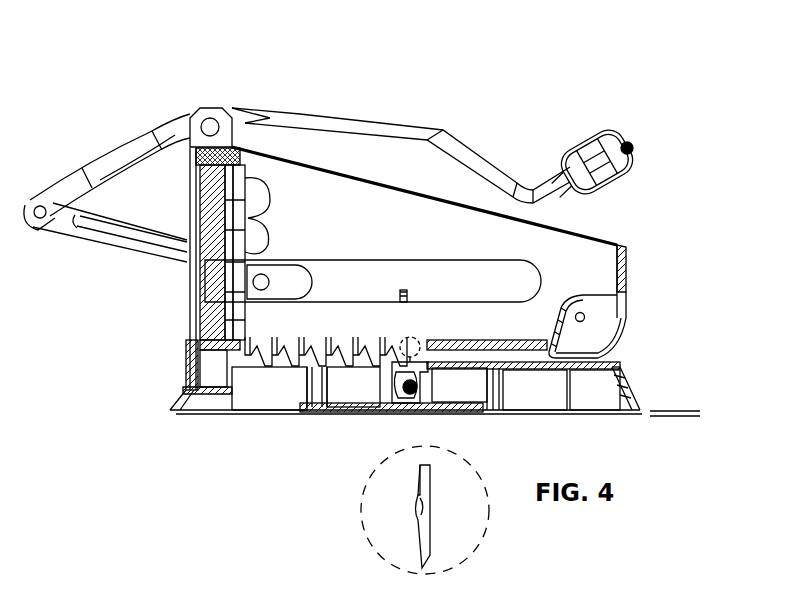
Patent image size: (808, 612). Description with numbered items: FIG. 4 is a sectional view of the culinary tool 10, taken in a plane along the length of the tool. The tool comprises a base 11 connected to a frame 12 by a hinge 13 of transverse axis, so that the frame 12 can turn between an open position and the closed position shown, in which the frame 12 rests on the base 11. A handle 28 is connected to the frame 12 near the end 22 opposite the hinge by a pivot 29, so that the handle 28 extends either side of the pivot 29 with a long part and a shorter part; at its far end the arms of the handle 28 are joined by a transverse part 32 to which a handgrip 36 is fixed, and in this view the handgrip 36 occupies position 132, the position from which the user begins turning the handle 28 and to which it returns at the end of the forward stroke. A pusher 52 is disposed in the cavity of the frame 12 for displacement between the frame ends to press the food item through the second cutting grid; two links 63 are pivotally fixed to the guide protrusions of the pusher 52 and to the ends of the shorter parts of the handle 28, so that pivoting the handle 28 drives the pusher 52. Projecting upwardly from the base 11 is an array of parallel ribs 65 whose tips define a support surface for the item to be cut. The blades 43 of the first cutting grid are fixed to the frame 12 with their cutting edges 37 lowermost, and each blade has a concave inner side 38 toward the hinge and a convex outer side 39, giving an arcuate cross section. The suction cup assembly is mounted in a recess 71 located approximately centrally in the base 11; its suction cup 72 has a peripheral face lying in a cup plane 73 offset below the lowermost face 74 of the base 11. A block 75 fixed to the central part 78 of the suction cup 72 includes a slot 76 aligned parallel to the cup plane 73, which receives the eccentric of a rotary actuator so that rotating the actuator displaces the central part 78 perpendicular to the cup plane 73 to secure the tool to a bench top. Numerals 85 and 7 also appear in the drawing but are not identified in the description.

The culinary tool 10 is at (105, 120).
The pivot 29 is at (212, 122).
The handle 28 is at (398, 118).
The handgrip 36 is at (583, 125).
The transverse part 32 is at (630, 146).
The position of the handgrip 132 is at (650, 142).
The grip surface 85 is at (640, 160).
The pusher 52 is at (270, 190).
The parallel ribs 65 is at (370, 342).
The links 63 is at (62, 228).
The frame 12 is at (603, 270).
The hinge 13 is at (585, 317).
The base 11 is at (615, 386).
The lowermost face 74 is at (674, 410).
The cup plane 73 is at (670, 424).
The suction cup 72 is at (487, 403).
The block 75 is at (413, 410).
The slot 76 is at (370, 407).
The recess 71 is at (253, 400).
The central part of the suction cup 78 is at (410, 387).
The end of the frame 22 is at (176, 416).
The blades 43 is at (433, 470).
The inner side 38 is at (435, 522).
The outer side 39 is at (415, 530).
The cutting edges 37 is at (436, 559).
The tool portion 7 is at (5, 327).